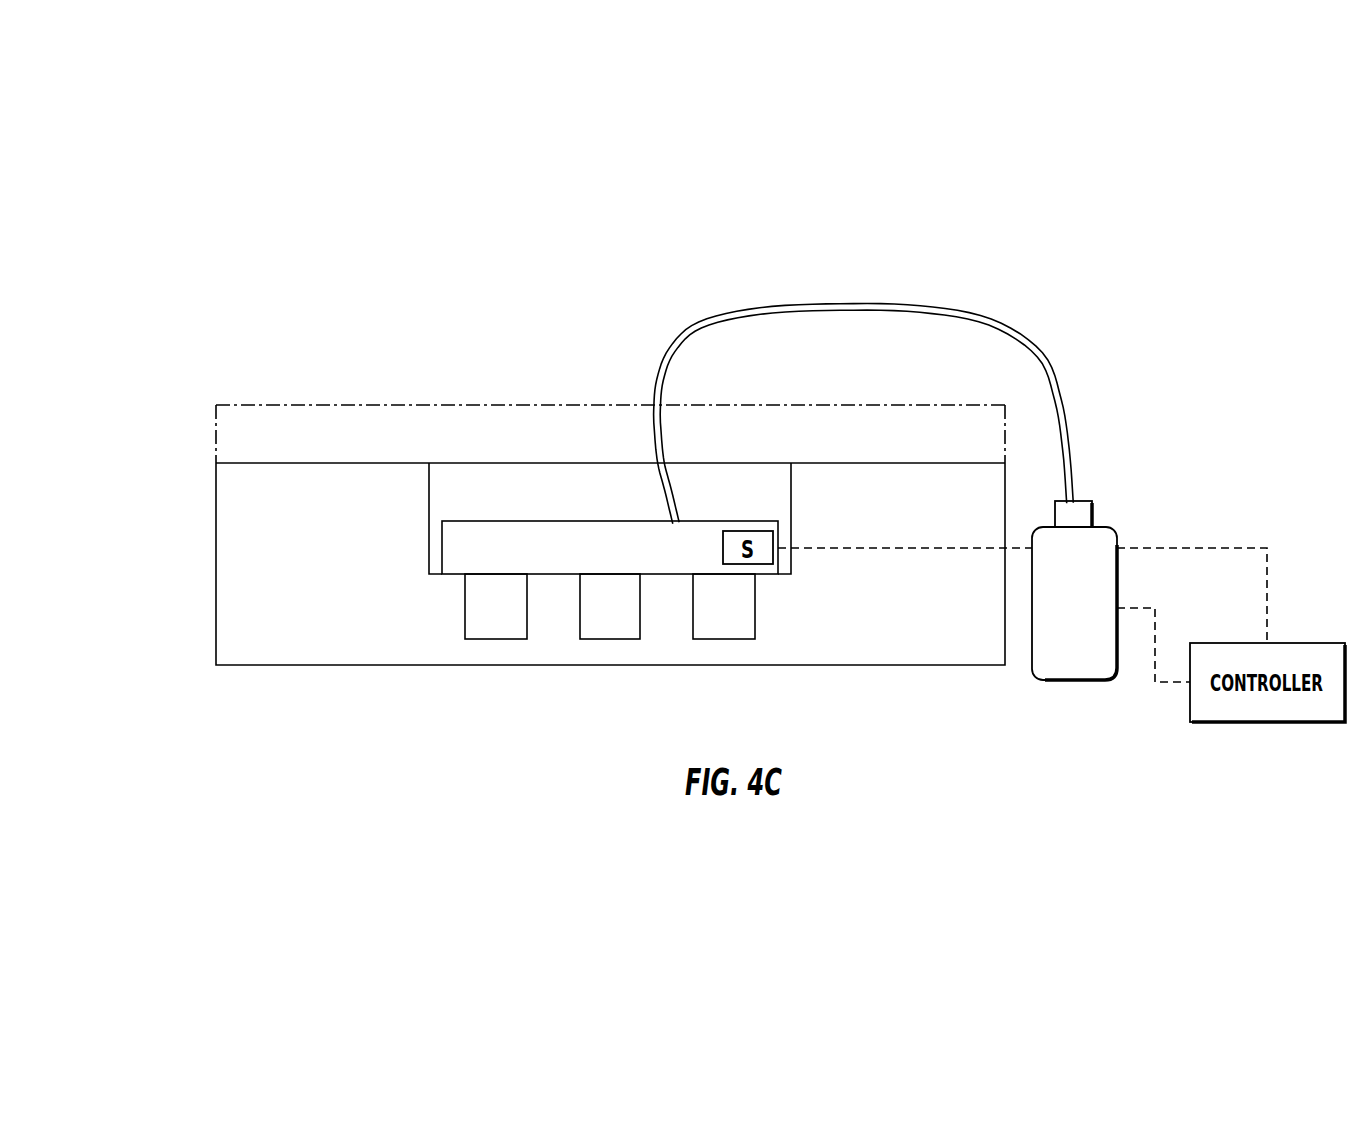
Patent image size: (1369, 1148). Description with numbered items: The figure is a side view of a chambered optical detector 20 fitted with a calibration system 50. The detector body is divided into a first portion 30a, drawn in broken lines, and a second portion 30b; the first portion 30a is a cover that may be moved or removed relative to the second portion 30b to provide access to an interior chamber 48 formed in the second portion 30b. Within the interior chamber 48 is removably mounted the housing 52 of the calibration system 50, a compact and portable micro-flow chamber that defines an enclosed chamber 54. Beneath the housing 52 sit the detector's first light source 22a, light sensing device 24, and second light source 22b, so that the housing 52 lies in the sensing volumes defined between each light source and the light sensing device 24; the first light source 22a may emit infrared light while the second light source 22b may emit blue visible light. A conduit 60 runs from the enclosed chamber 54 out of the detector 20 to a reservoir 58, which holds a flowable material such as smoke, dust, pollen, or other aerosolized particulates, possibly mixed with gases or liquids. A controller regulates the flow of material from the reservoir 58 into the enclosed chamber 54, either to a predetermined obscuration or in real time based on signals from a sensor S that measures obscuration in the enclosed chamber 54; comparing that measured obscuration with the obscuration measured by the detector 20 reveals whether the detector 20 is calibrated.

The detector 20 is at (148, 360).
The first portion of the detector body 30a is at (255, 448).
The second portion of the detector body 30b is at (288, 563).
The interior chamber 48 is at (610, 491).
The housing 52 is at (487, 520).
The enclosed chamber 54 is at (610, 547).
The first light source 22a is at (497, 610).
The light sensing device 24 is at (617, 610).
The second light source 22b is at (732, 610).
The calibration system 50 is at (886, 284).
The conduit 60 is at (1068, 413).
The reservoir 58 is at (1074, 590).